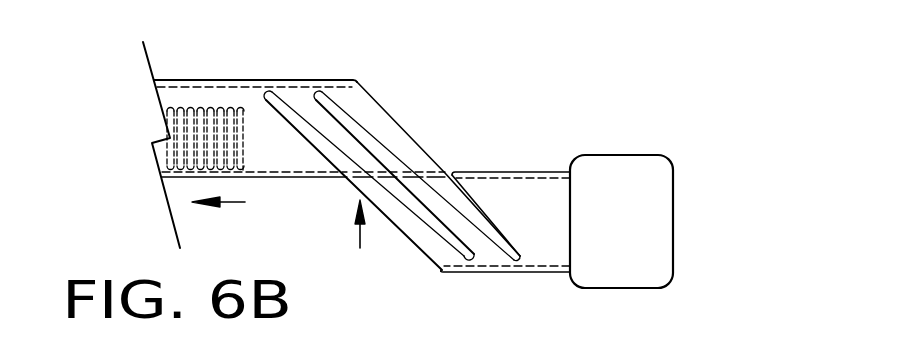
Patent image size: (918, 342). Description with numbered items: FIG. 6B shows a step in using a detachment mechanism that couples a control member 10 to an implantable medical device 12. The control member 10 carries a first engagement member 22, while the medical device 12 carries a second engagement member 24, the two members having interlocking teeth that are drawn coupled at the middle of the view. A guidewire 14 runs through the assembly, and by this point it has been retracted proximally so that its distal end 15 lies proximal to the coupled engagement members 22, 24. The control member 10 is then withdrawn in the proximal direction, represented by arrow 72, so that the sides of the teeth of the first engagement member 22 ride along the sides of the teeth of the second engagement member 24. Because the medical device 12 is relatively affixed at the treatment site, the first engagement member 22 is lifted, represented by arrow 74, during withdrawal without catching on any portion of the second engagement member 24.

The control member 10 is at (180, 97).
The implantable medical device 12 is at (620, 155).
The guidewire 14 is at (229, 110).
The distal end 15 is at (242, 123).
The first engagement member 22 is at (316, 102).
The second engagement member 24 is at (390, 202).
The arrow 72 is at (232, 205).
The arrow 74 is at (358, 236).